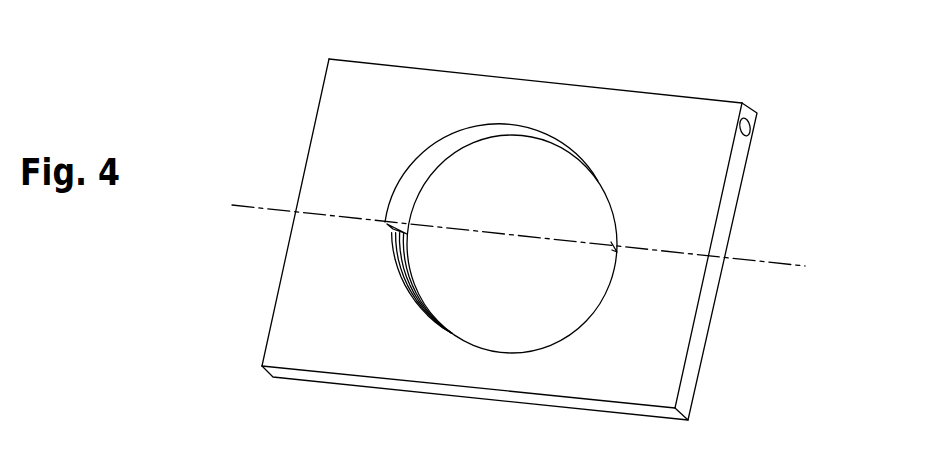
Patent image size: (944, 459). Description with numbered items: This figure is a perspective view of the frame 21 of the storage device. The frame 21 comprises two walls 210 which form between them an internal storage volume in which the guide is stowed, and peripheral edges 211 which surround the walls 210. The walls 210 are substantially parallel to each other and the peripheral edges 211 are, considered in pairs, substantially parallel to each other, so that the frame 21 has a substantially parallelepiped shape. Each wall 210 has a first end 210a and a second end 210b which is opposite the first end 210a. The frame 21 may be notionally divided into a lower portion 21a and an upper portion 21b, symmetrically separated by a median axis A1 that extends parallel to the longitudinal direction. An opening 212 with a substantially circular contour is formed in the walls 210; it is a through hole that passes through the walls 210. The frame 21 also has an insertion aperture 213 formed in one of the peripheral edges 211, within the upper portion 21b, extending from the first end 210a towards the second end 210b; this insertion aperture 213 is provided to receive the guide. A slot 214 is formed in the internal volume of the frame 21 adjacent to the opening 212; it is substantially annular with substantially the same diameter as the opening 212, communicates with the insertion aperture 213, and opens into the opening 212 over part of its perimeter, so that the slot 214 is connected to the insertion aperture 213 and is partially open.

The frame 21 is at (288, 81).
The walls 210 is at (649, 133).
The first end 210a is at (720, 281).
The second end 210b is at (299, 183).
The peripheral edges 211 is at (732, 198).
The opening 212 is at (567, 303).
The insertion aperture 213 is at (751, 129).
The slot 214 is at (478, 128).
The lower portion 21a is at (522, 392).
The upper portion 21b is at (533, 97).
The median axis A1 is at (518, 235).